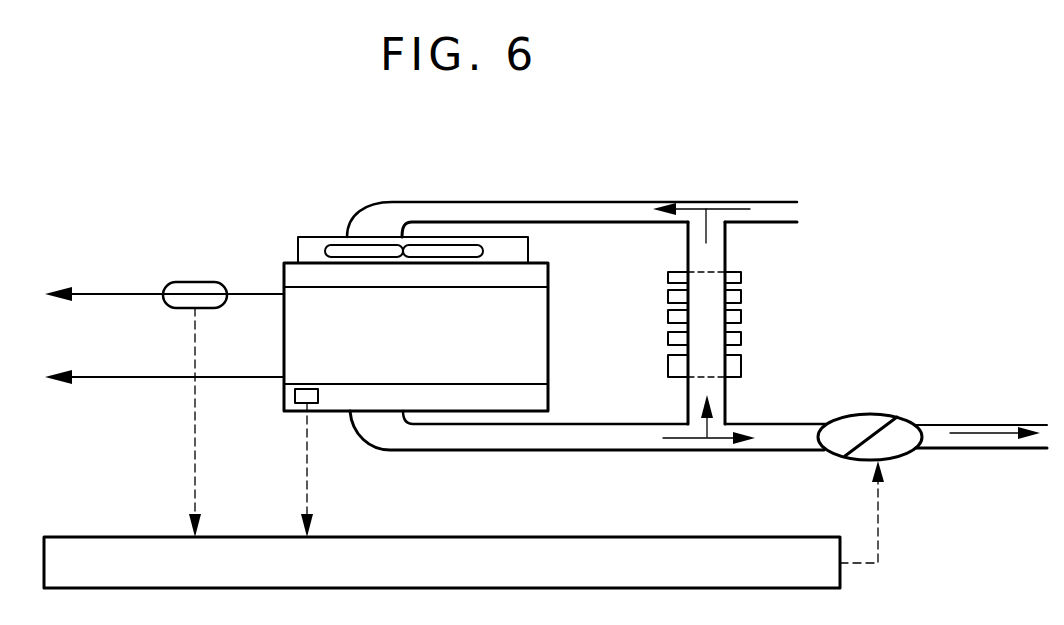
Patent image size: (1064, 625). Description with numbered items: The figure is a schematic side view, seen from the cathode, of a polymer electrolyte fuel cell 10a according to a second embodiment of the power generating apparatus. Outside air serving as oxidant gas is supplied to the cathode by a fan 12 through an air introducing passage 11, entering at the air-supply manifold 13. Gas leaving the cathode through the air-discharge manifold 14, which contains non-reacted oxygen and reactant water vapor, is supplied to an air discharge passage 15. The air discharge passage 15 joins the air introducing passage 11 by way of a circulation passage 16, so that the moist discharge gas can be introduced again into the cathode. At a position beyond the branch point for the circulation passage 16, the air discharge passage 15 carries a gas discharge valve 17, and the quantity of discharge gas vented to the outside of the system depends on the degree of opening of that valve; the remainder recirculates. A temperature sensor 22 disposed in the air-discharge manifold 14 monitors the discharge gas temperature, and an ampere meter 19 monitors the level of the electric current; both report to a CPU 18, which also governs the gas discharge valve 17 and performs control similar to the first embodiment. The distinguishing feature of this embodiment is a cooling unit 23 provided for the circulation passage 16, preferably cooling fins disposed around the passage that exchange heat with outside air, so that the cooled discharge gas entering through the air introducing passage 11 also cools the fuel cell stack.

The fuel cell 10a is at (270, 262).
The air introducing passage 11 is at (600, 204).
The fan 12 is at (338, 248).
The air-supply manifold 13 is at (538, 275).
The air-discharge manifold 14 is at (538, 398).
The air discharge passage 15 is at (515, 440).
The circulation passage 16 is at (688, 252).
The gas discharge valve 17 is at (868, 418).
The CPU 18 is at (142, 548).
The ampere meter 19 is at (178, 303).
The temperature sensor 22 is at (292, 397).
The cooling unit 23 is at (741, 312).